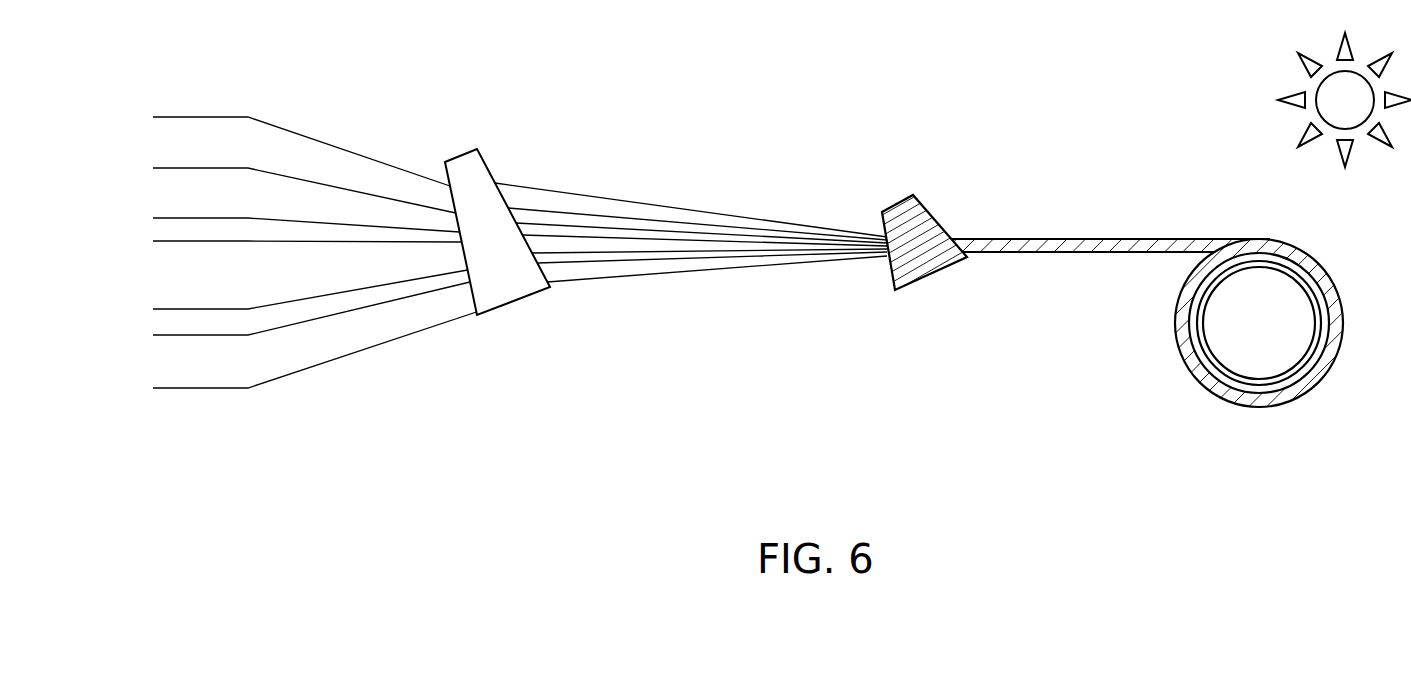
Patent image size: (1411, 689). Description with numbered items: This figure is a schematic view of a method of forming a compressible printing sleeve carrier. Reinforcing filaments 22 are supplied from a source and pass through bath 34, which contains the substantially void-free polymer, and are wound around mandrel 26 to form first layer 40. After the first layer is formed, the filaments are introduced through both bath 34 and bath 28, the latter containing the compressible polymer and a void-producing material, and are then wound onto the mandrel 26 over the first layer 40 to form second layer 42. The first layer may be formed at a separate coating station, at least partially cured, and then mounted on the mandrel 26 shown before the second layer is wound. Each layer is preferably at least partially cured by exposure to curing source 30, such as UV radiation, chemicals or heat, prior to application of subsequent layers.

The reinforcing filaments 22 is at (318, 140).
The bath 34 is at (462, 152).
The bath 28 is at (902, 195).
The mandrel 26 is at (1270, 283).
The second layer 42 is at (1345, 317).
The first layer 40 is at (1313, 357).
The curing source 30 is at (1350, 143).